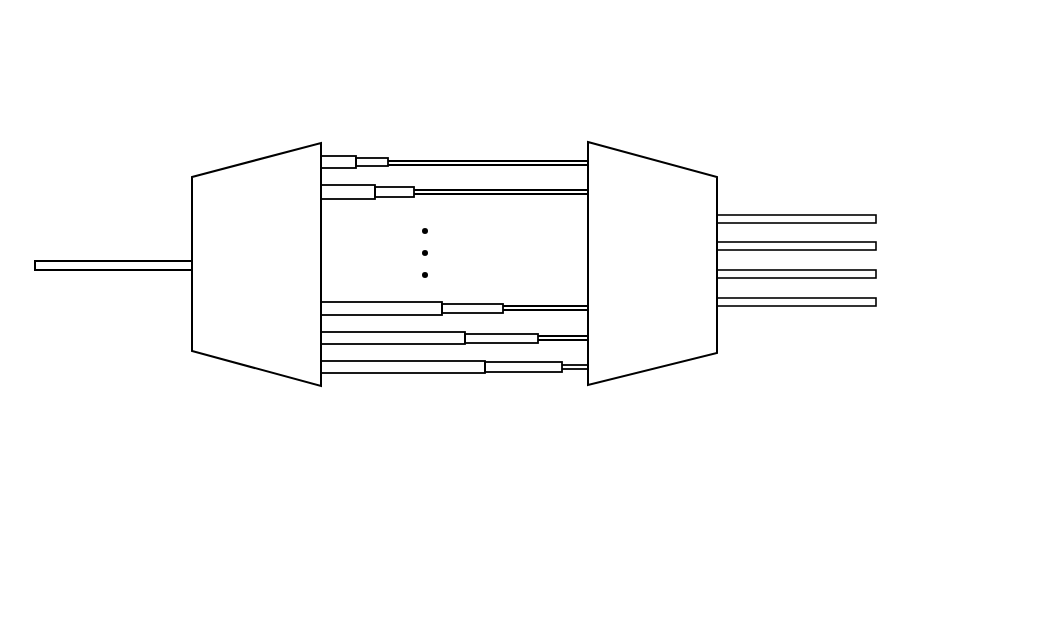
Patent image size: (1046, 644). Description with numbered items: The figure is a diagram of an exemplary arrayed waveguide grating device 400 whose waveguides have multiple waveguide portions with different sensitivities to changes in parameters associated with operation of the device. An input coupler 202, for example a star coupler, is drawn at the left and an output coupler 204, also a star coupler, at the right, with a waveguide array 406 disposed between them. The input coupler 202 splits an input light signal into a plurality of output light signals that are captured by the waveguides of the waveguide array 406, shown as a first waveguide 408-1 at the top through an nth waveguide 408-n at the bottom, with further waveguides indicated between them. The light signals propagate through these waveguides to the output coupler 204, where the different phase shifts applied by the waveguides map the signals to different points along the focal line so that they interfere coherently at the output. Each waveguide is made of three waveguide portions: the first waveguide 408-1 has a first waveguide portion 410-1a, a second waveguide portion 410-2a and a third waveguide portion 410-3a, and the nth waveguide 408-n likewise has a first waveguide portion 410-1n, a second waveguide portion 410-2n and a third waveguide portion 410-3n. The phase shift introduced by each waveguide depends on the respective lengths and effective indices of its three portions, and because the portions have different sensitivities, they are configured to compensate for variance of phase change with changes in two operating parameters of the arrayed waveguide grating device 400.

The arrayed waveguide grating device 400 is at (632, 44).
The input coupler 202 is at (217, 360).
The output coupler 204 is at (628, 362).
The waveguide array 406 is at (437, 466).
The first waveguide 408-1 is at (365, 97).
The nth waveguide 408-n is at (454, 437).
The first waveguide portion 410-1a is at (341, 156).
The second waveguide portion 410-2a is at (375, 157).
The third waveguide portion 410-3a is at (490, 158).
The first waveguide portion 410-1n is at (397, 375).
The second waveguide portion 410-2n is at (517, 374).
The third waveguide portion 410-3n is at (577, 374).